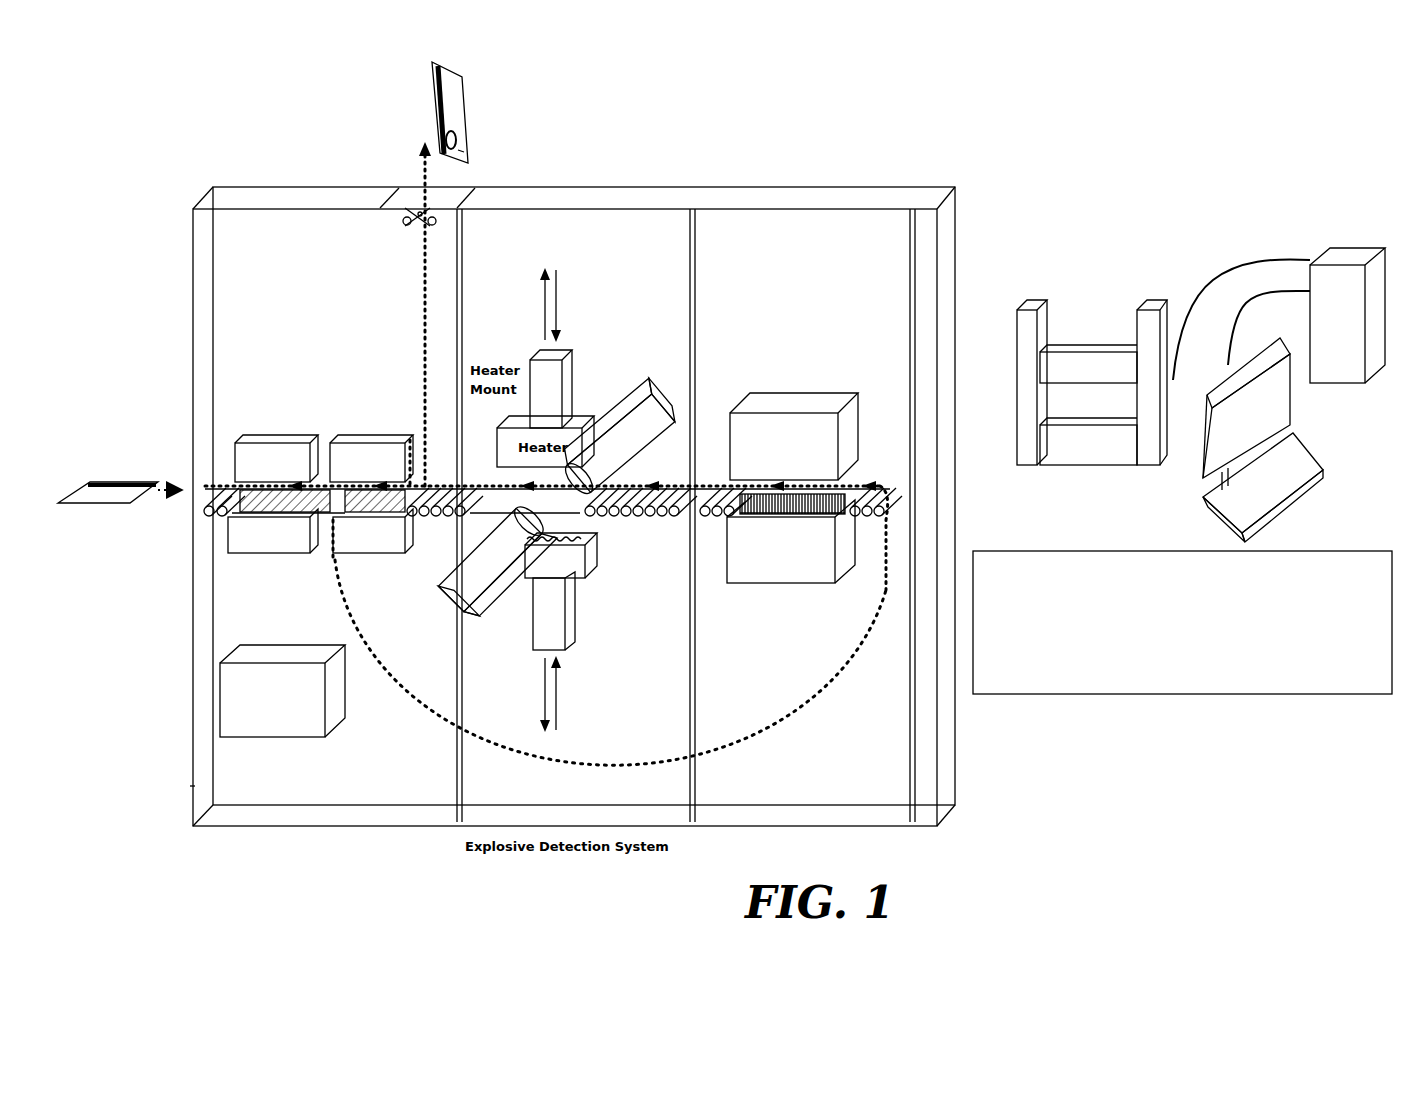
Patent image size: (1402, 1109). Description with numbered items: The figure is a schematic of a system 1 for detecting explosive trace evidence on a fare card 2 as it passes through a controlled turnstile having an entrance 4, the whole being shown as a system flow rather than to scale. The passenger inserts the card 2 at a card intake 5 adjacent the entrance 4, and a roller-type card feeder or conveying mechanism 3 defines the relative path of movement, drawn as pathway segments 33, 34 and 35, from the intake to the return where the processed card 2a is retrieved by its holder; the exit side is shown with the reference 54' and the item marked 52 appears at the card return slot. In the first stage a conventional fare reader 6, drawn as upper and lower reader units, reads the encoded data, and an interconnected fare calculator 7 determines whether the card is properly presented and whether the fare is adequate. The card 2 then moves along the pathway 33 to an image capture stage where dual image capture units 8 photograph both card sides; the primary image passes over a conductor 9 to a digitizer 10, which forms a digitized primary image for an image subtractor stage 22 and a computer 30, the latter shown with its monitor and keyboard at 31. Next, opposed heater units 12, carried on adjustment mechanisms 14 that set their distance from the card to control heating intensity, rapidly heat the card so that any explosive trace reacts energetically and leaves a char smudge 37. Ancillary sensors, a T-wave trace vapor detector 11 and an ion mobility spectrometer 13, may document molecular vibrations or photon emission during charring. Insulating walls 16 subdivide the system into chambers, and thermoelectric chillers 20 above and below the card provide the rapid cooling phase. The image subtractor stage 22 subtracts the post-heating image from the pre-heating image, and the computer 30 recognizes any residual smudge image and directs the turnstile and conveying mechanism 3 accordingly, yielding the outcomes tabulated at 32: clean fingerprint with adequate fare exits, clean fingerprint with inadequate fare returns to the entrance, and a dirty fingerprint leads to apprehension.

The system 1 is at (708, 178).
The fare card 2 is at (114, 498).
The processed card 2a is at (470, 138).
The card feeder or conveying mechanism 3 is at (226, 476).
The turnstile entrance 4 is at (190, 786).
The card intake 5 is at (186, 468).
The fare reader 6 is at (252, 440).
The fare calculator 7 is at (288, 736).
The image capture unit 8 is at (366, 438).
The conductor 9 is at (960, 525).
The digitizer 10 is at (1114, 338).
The ancillary trace vapor detector 11 is at (660, 398).
The heater unit 12 is at (588, 568).
The ion mobility spectrometer 13 is at (456, 608).
The adjustment mechanism 14 is at (564, 382).
The insulating wall 16 is at (690, 234).
The thermoelectric chiller 20 is at (850, 426).
The image subtractor stage 22 is at (1052, 466).
The computer 30 is at (1354, 260).
The monitor and keyboard 31 is at (1276, 420).
The analysis outcomes 32 is at (1176, 694).
The pathway 33 is at (458, 498).
The pathway 34 is at (550, 792).
The pathway 35 is at (420, 344).
The char smudge 37 is at (458, 160).
The slot rollers 52 is at (424, 212).
The turnstile exit 54' is at (962, 662).